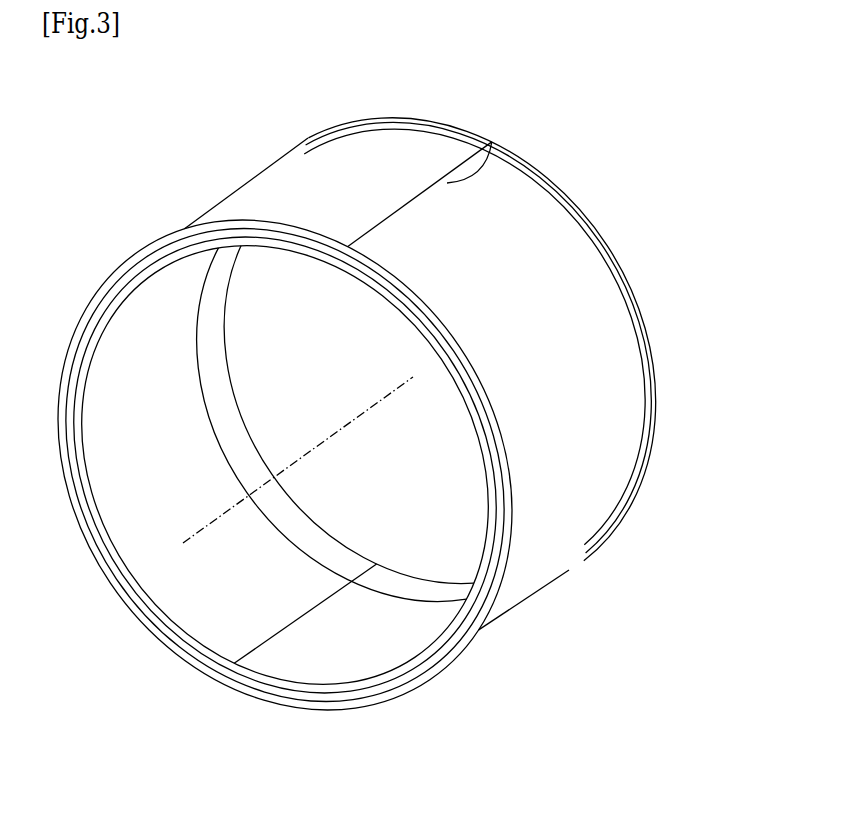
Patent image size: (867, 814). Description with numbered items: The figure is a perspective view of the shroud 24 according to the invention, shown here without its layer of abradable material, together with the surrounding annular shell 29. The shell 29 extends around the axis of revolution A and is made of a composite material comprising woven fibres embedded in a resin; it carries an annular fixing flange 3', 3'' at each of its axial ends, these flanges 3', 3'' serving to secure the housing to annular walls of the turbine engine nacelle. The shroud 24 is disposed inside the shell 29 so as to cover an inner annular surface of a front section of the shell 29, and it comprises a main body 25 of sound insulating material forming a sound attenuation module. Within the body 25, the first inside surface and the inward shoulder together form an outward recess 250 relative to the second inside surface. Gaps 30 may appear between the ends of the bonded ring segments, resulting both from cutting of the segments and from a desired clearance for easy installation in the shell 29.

The annular fixing flange 3' is at (302, 464).
The annular fixing flange 3'' is at (500, 339).
The shroud 24 is at (368, 644).
The main body 25 is at (187, 577).
The outward recess 250 is at (222, 420).
The annular shell 29 is at (606, 431).
The gap 30 is at (447, 183).
The axis of revolution A is at (371, 410).